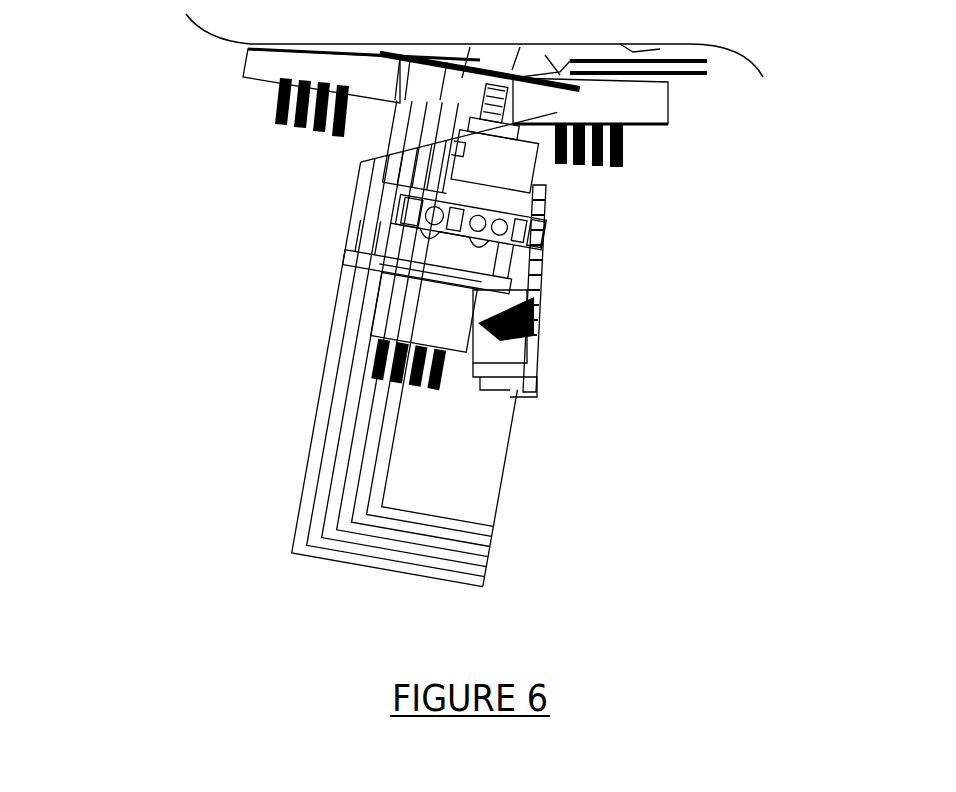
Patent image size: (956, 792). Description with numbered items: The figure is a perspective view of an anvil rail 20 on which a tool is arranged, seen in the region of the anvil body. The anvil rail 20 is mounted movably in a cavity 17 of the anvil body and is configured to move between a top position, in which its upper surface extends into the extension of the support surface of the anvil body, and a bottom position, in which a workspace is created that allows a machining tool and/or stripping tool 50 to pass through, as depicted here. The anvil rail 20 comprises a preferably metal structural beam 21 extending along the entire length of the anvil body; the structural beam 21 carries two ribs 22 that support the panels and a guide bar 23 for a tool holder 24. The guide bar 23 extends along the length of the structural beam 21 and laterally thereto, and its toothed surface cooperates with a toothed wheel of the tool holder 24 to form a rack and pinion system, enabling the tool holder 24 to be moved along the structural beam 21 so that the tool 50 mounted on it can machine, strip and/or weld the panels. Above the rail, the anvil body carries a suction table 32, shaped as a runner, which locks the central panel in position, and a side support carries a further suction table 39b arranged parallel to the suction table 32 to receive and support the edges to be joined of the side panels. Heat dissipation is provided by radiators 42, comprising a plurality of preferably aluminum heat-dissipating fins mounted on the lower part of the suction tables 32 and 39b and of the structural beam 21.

The suction table 39b is at (257, 63).
The radiators 42 is at (303, 125).
The suction table 32 is at (657, 108).
The machining tool and/or stripping tool 50 is at (497, 175).
The tool holder 24 is at (537, 205).
The ribs 22 is at (390, 233).
The structural beam 21 is at (390, 297).
The anvil rail 20 is at (368, 311).
The guide bar 23 is at (493, 350).
The cavity 17 is at (457, 452).